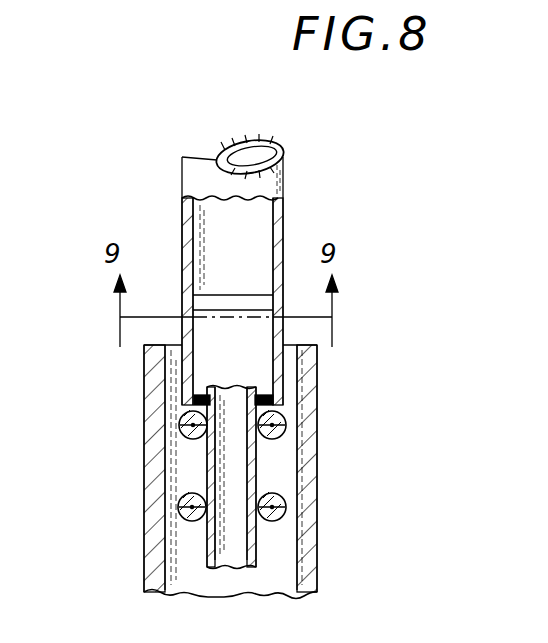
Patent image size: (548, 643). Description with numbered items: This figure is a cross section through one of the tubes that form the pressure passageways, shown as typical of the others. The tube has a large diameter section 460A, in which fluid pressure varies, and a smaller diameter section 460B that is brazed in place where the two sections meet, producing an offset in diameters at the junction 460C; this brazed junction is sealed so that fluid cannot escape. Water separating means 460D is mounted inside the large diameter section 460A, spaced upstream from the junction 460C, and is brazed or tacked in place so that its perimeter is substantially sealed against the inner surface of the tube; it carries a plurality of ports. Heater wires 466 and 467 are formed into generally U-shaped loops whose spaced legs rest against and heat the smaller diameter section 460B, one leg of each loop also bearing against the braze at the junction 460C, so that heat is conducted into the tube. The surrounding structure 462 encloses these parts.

The large diameter section 460A is at (283, 180).
The smaller diameter section 460B is at (256, 552).
The junction 460C is at (270, 393).
The water separating means 460D is at (220, 295).
The housing 462 is at (145, 565).
The heater wire 466 is at (286, 431).
The heater wire 467 is at (181, 498).